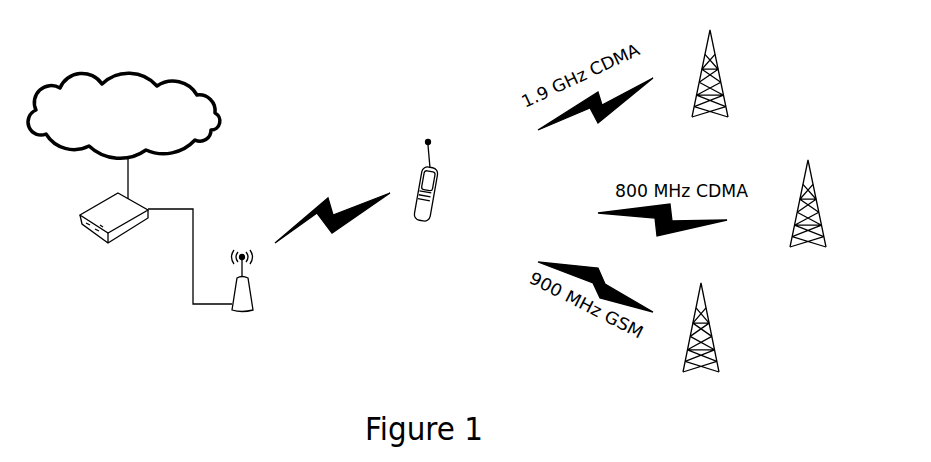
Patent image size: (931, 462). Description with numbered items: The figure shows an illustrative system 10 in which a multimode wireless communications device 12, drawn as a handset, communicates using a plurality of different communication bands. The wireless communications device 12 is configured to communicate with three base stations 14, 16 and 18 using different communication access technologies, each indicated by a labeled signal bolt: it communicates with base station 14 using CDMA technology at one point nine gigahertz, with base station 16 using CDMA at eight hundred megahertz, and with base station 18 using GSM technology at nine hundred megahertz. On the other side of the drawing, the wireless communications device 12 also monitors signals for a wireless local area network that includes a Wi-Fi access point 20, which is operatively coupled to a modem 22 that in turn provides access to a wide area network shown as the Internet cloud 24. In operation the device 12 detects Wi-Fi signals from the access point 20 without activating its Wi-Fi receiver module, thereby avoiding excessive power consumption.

The illustrative system 10 is at (423, 92).
The wireless communications device 12 is at (417, 182).
The base station 14 is at (717, 73).
The base station 16 is at (812, 183).
The base station 18 is at (709, 320).
The Wi-Fi access point 20 is at (253, 297).
The modem 22 is at (87, 210).
The Internet cloud 24 is at (115, 75).